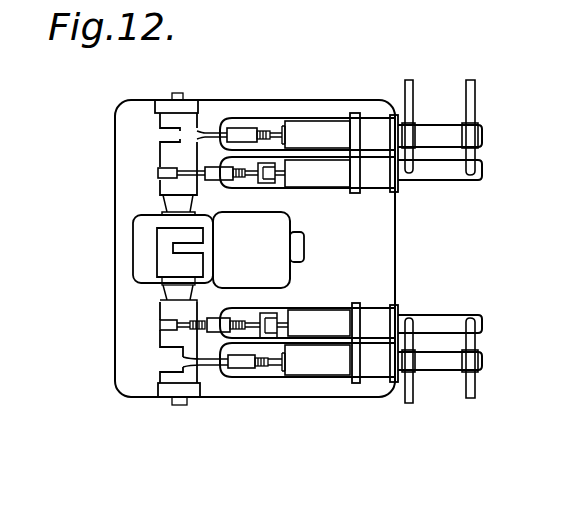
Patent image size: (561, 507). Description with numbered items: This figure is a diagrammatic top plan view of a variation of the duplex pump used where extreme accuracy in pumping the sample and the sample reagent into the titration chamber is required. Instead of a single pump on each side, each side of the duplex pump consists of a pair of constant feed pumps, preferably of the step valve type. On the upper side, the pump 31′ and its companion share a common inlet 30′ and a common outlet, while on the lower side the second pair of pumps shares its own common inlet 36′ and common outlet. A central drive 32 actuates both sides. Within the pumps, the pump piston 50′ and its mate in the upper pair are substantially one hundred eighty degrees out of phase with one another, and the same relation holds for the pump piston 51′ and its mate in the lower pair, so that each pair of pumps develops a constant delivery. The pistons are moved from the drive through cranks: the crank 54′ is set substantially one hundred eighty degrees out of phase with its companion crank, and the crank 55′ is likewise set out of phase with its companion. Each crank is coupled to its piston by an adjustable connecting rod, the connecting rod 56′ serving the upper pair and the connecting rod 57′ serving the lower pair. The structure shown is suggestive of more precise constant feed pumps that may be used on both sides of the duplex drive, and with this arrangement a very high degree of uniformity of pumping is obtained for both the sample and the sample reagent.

The common inlet 30′ is at (475, 98).
The constant feed pump 31′ is at (323, 125).
The drive 32 is at (264, 254).
The common inlet 36′ is at (472, 400).
The pump piston 50′ is at (288, 122).
The pump piston 51′ is at (280, 320).
The crank 54′ is at (193, 133).
The crank 55′ is at (160, 323).
The connecting rod 56′ is at (240, 130).
The connecting rod 57′ is at (203, 323).